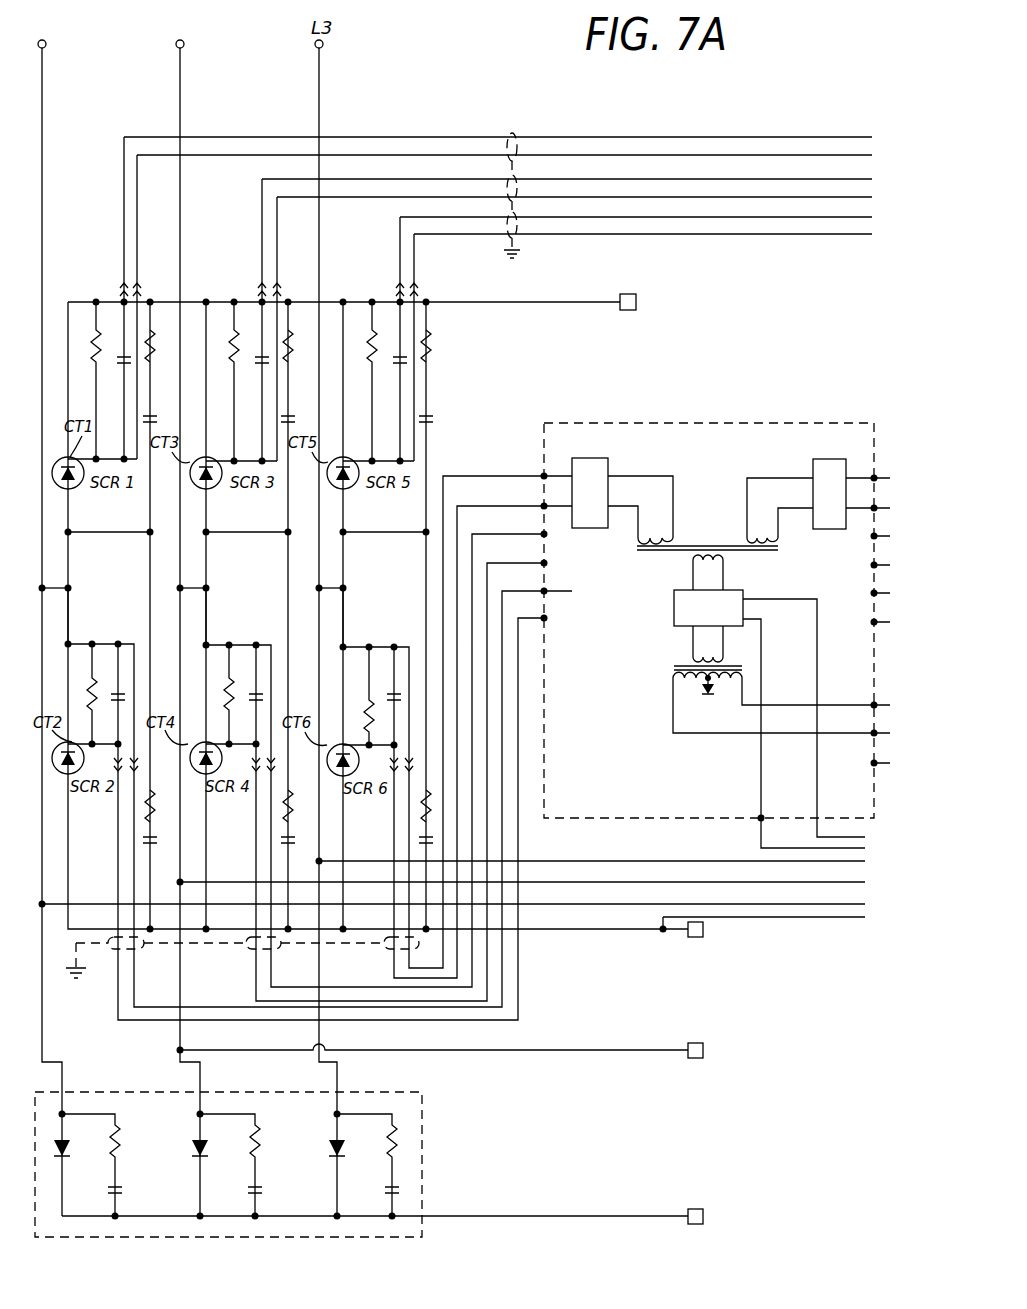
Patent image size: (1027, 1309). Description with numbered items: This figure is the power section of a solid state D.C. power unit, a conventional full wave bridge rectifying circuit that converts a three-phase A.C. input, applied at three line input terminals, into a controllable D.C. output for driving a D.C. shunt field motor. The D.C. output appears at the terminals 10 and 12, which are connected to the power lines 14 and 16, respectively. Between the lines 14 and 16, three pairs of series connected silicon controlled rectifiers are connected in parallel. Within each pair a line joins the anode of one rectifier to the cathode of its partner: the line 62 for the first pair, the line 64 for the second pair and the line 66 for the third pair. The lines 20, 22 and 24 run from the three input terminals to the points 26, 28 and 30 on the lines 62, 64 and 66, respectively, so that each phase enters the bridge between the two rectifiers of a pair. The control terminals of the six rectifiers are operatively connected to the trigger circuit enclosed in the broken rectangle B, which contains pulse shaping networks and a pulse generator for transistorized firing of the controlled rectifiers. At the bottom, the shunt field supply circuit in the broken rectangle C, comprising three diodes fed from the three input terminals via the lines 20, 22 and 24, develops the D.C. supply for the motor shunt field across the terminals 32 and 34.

The output terminal 10 is at (636, 300).
The output terminal 12 is at (703, 930).
The power line 14 is at (512, 302).
The power line 16 is at (553, 932).
The line 20 is at (42, 236).
The line 22 is at (182, 224).
The line 24 is at (333, 137).
The point 26 is at (68, 590).
The point 28 is at (206, 590).
The point 30 is at (343, 590).
The terminal 32 is at (703, 1050).
The terminal 34 is at (703, 1216).
The line 62 is at (68, 622).
The line 64 is at (206, 622).
The line 66 is at (343, 622).
The trigger circuit B is at (720, 425).
The shunt field supply circuit C is at (422, 1135).